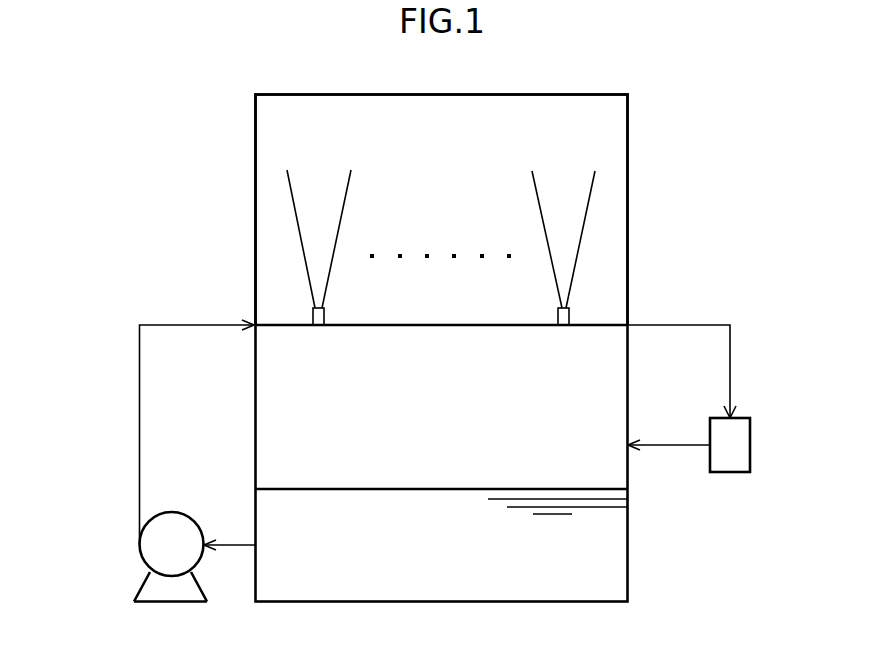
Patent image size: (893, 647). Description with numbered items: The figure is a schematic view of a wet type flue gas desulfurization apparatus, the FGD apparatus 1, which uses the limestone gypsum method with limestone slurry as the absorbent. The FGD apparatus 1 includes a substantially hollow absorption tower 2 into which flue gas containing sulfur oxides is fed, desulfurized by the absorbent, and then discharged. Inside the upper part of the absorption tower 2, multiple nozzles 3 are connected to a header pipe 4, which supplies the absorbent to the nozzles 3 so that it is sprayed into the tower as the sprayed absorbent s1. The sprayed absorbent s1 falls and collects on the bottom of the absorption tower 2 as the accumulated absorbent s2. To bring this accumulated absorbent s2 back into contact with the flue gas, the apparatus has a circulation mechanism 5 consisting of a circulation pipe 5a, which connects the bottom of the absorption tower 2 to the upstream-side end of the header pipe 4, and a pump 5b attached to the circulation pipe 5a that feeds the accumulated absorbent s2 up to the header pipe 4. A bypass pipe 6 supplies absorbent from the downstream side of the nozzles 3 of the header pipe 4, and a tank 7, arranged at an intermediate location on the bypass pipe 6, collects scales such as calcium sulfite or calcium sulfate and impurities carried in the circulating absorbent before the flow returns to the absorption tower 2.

The FGD apparatus 1 is at (636, 93).
The absorption tower 2 is at (255, 150).
The nozzles 3 is at (317, 326).
The header pipe 4 is at (443, 327).
The circulation mechanism 5 is at (159, 461).
The circulation pipe 5a is at (139, 380).
The pump 5b is at (157, 587).
The bypass pipe 6 is at (670, 327).
The tank 7 is at (730, 453).
The sprayed absorbent s1 is at (317, 184).
The accumulated absorbent s2 is at (465, 507).